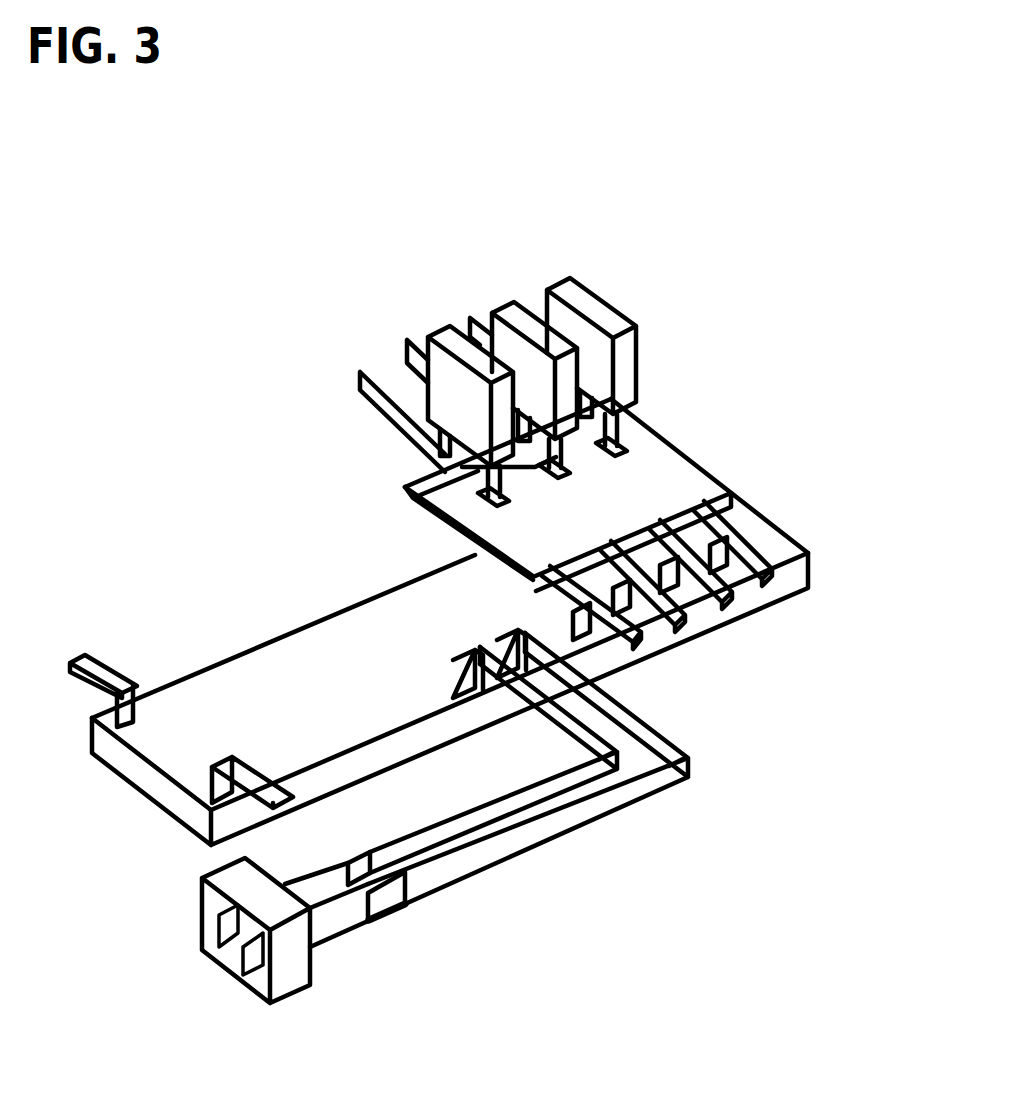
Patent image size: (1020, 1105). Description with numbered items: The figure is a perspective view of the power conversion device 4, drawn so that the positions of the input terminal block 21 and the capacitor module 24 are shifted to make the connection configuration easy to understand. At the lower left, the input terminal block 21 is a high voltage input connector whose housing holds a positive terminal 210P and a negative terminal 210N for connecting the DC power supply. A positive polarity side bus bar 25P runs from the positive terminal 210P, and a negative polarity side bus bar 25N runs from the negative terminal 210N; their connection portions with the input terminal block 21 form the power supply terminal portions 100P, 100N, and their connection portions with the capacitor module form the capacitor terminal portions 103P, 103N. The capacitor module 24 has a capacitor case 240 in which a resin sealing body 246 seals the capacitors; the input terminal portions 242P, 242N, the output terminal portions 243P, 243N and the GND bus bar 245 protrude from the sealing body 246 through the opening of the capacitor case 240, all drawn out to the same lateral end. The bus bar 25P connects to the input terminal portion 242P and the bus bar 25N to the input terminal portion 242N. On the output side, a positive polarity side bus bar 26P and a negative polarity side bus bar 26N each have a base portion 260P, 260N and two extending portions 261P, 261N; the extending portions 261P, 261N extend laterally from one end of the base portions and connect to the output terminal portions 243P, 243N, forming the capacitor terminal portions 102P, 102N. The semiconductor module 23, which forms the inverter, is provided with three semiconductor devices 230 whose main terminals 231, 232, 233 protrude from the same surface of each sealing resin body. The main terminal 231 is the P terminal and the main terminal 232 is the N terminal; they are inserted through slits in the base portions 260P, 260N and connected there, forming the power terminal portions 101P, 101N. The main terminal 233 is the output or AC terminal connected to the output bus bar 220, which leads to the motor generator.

The power conversion device 4 is at (727, 330).
The input terminal block 21 is at (293, 997).
The positive terminal 210P is at (298, 883).
The negative terminal 210N is at (342, 913).
The power supply terminal portion 100P is at (370, 855).
The power supply terminal portion 100N is at (393, 900).
The positive polarity side bus bar 25P is at (463, 812).
The negative polarity side bus bar 25N is at (612, 815).
The capacitor terminal portion 103P is at (503, 692).
The capacitor terminal portion 103N is at (567, 658).
The capacitor module 24 is at (800, 537).
The capacitor case 240 is at (812, 570).
The sealing body 246 is at (218, 685).
The GND bus bar 245 is at (100, 660).
The input terminal portion 242P is at (458, 655).
The input terminal portion 242N is at (510, 637).
The output terminal portion 243P is at (690, 625).
The output terminal portion 243N is at (780, 575).
The capacitor terminal portion 102P is at (745, 612).
The capacitor terminal portion 102N is at (783, 551).
The positive polarity side bus bar 26P is at (672, 442).
The negative polarity side bus bar 26N is at (423, 505).
The base portion 260P is at (672, 480).
The base portion 260N is at (415, 487).
The extending portion 261P is at (720, 515).
The extending portion 261N is at (677, 507).
The semiconductor module 23 is at (578, 278).
The semiconductor device 230 is at (558, 290).
The output bus bar 220 is at (368, 388).
The main terminal 231 is at (613, 420).
The main terminal 232 is at (607, 400).
The main terminal 233 is at (430, 435).
The power terminal portion 101P is at (478, 503).
The power terminal portion 101N is at (448, 468).